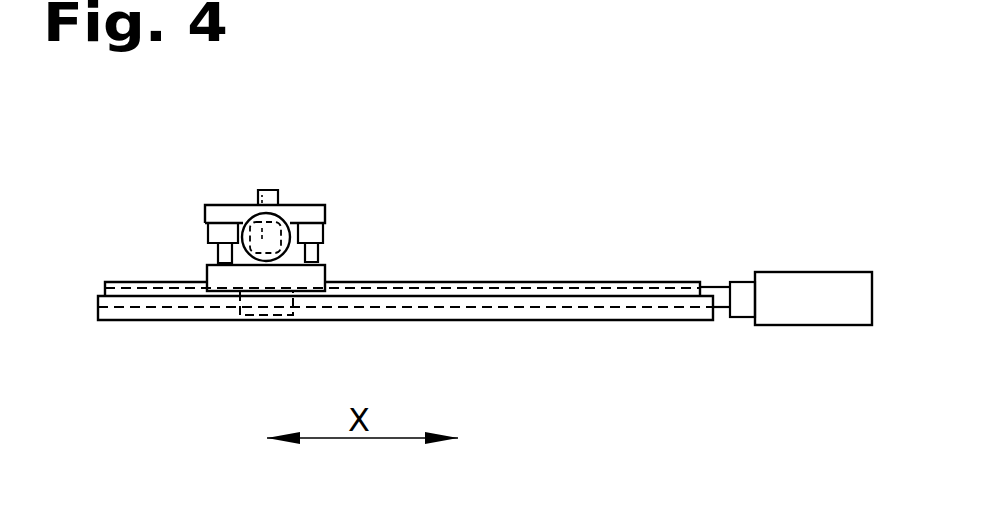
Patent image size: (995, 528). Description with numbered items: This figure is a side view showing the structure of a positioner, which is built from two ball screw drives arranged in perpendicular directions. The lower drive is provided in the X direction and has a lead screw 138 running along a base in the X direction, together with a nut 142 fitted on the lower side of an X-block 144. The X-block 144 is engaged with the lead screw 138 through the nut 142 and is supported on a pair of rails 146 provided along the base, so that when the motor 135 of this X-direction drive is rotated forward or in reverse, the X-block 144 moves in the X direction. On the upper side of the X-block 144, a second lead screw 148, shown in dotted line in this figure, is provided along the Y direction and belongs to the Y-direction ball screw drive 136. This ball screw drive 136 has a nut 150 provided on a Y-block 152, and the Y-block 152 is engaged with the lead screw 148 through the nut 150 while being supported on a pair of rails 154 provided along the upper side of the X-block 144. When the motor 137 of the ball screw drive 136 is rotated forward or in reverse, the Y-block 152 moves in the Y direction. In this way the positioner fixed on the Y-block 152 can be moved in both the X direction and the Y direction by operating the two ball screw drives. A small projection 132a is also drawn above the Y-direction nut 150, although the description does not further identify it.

The projection 132a is at (272, 200).
The motor 135 is at (800, 290).
The ball screw drive 136 is at (233, 213).
The motor 137 is at (247, 223).
The lead screw 138 is at (590, 305).
The nut 142 is at (268, 316).
The X-block 144 is at (320, 277).
The rails 146 is at (518, 280).
The lead screw 148 is at (255, 187).
The nut 150 is at (303, 223).
The Y-block 152 is at (318, 217).
The rails 154 is at (217, 258).